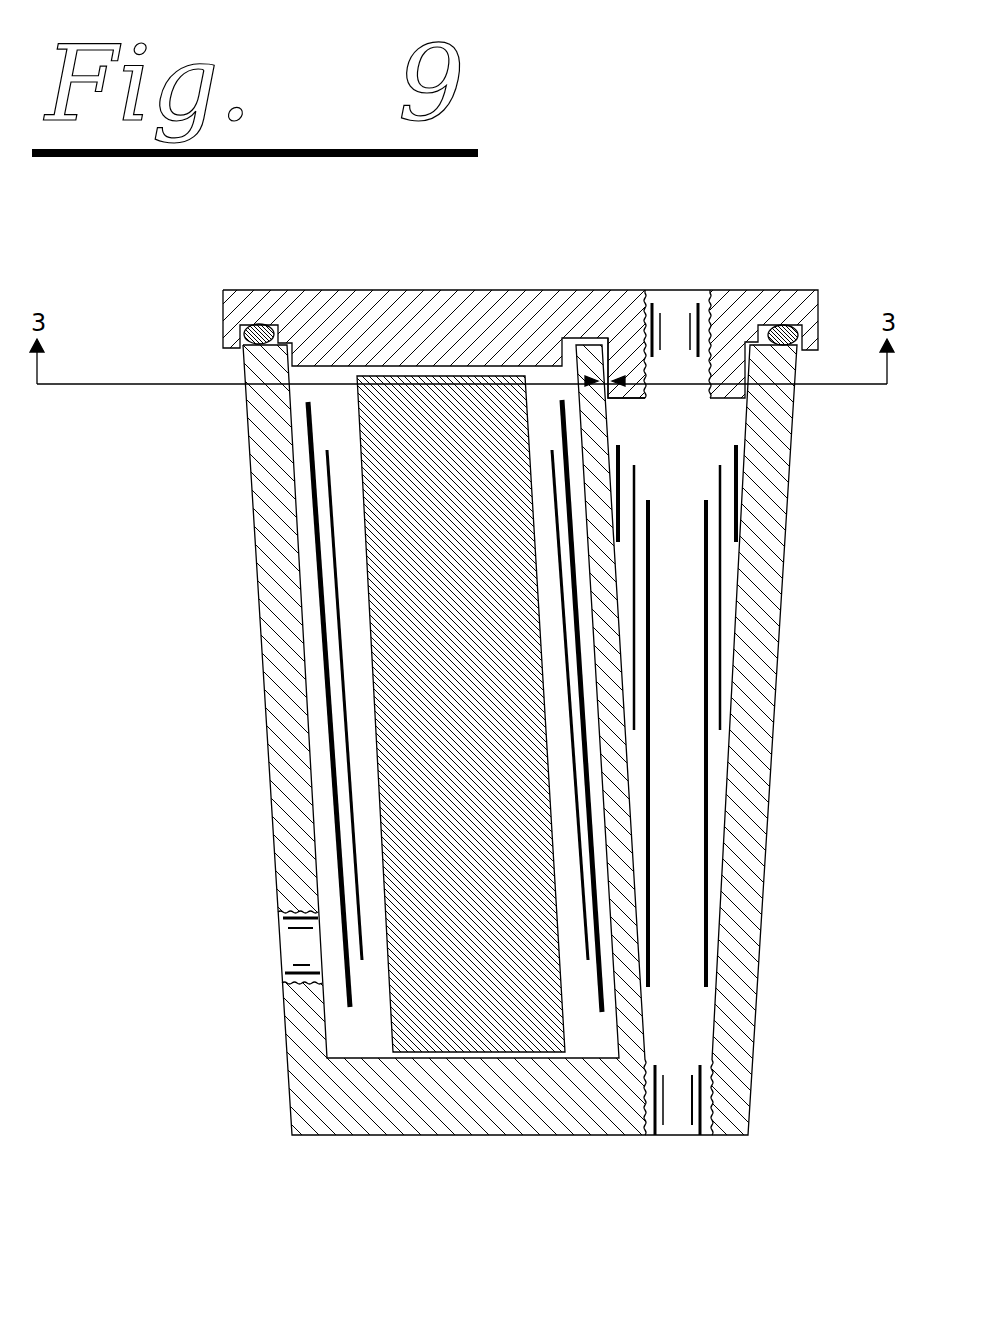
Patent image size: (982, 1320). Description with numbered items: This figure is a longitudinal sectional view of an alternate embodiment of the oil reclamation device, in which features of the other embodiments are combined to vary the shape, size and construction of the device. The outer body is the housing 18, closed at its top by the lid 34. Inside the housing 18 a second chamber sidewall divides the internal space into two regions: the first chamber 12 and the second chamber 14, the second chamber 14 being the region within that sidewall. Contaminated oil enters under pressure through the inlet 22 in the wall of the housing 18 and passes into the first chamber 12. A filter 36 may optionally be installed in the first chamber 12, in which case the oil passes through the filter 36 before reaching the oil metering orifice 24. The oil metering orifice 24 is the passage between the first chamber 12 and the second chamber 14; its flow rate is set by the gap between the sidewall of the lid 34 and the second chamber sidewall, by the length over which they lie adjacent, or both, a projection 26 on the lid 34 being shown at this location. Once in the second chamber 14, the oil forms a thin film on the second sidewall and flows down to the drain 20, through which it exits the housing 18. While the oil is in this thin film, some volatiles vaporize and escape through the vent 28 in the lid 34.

The vent 28 is at (655, 313).
The lid 34 is at (447, 317).
The projection 26 is at (622, 354).
The oil metering orifice 24 is at (590, 381).
The filter 36 is at (465, 712).
The first chamber 12 is at (318, 773).
The second chamber 14 is at (677, 890).
The inlet 22 is at (282, 977).
The housing 18 is at (300, 1027).
The drain 20 is at (677, 1095).